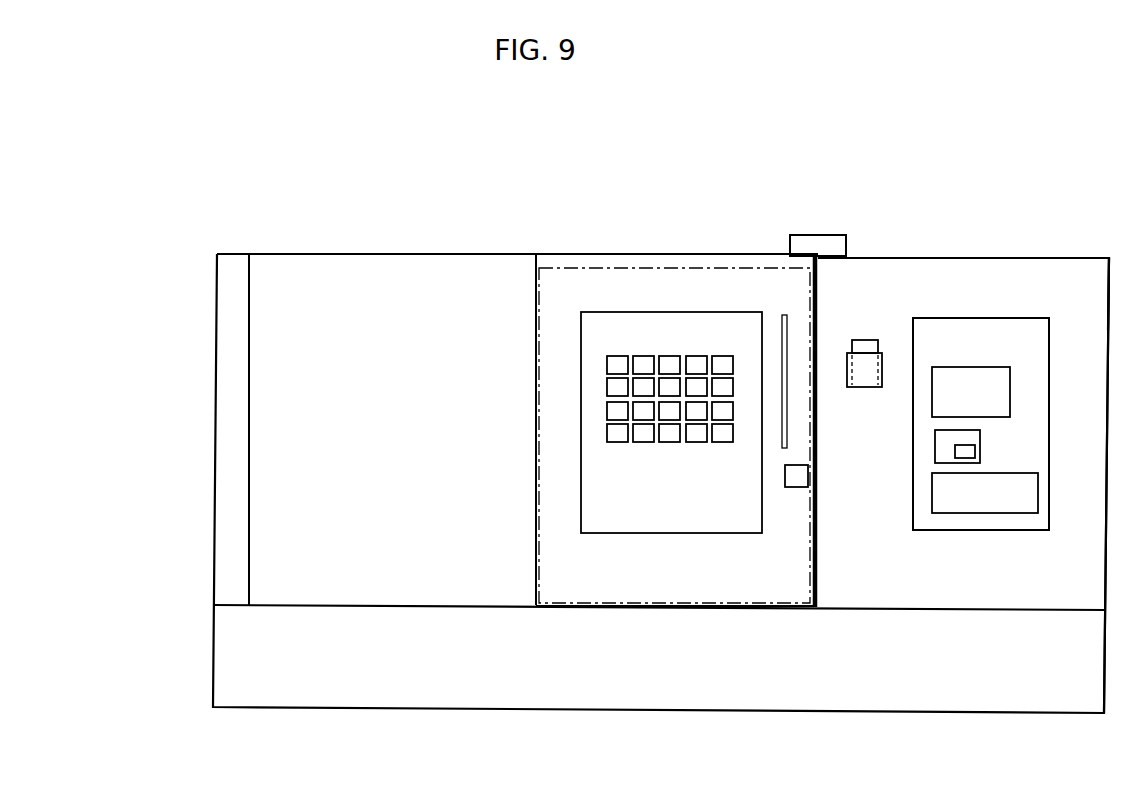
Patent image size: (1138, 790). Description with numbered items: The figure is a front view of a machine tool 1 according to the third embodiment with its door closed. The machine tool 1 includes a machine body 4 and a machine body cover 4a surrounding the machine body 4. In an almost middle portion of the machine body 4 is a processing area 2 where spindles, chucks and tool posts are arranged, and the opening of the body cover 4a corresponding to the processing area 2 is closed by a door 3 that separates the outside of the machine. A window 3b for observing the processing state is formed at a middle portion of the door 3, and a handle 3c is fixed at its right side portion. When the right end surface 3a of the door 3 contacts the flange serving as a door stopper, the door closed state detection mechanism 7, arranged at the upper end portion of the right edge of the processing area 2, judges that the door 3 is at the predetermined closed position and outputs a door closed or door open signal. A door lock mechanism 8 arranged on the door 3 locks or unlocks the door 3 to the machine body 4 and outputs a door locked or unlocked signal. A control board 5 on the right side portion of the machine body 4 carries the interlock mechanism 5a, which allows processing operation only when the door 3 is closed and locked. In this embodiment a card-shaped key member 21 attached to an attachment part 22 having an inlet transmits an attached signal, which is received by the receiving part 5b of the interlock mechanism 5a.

The machine tool 1 is at (394, 213).
The processing area 2 is at (572, 272).
The door 3 is at (681, 268).
The right end surface 3a is at (819, 594).
The window 3b is at (614, 357).
The handle 3c is at (784, 315).
The machine body 4 is at (947, 274).
The machine body cover 4a is at (1086, 272).
The control board 5 is at (979, 325).
The interlock mechanism 5a is at (942, 440).
The receiving part 5b is at (975, 452).
The door closed state detection mechanism 7 is at (834, 233).
The door lock mechanism 8 is at (785, 480).
The key member 21 is at (863, 345).
The attachment part 22 is at (882, 353).